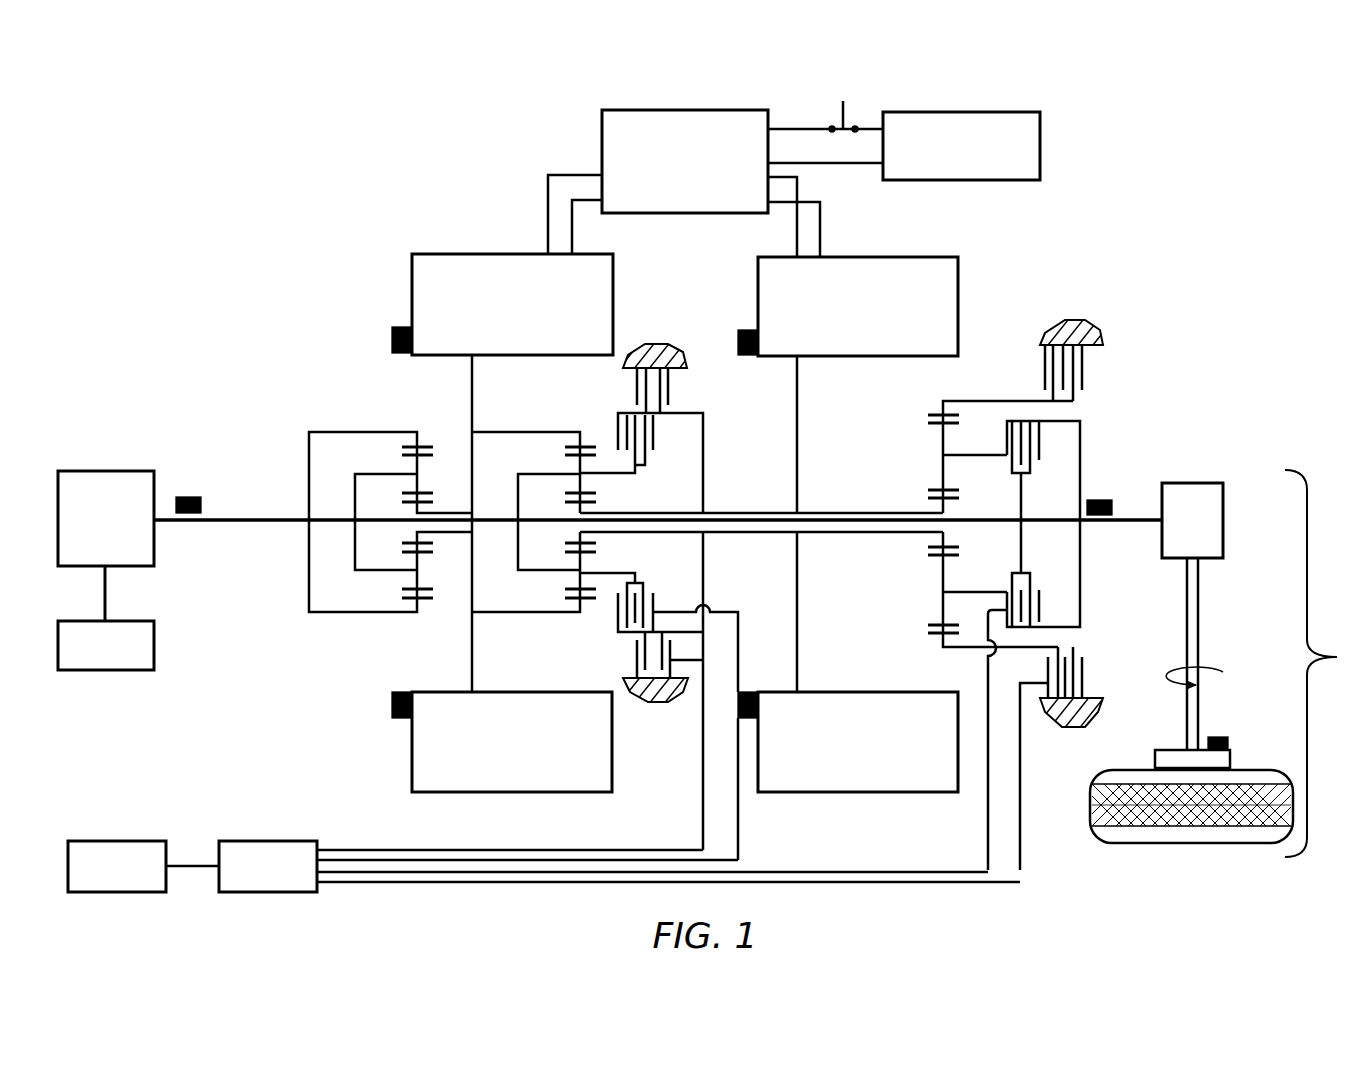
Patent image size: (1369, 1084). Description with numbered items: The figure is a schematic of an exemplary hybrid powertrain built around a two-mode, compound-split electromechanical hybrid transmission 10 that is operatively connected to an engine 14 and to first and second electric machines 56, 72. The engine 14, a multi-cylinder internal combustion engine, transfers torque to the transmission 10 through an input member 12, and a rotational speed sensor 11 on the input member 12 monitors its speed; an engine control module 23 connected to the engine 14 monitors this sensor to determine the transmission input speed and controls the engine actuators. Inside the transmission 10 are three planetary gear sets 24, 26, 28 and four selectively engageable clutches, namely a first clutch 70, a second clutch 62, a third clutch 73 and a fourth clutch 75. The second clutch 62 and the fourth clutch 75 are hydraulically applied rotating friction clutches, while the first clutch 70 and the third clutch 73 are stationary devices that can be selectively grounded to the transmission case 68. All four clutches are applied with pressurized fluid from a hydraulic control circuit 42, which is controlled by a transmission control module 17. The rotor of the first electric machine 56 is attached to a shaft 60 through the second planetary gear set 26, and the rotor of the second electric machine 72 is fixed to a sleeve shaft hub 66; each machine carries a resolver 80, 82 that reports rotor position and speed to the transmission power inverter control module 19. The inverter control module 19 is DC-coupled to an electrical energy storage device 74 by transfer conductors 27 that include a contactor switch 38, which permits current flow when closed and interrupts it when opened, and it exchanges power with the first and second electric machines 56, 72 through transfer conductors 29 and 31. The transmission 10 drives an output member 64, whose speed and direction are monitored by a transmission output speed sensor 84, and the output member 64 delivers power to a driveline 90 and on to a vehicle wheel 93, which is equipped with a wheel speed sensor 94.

The electromechanical hybrid transmission 10 is at (370, 210).
The rotational speed sensor 11 is at (188, 496).
The input member 12 is at (270, 518).
The engine 14 is at (112, 471).
The transmission control module 17 is at (105, 841).
The transmission power inverter control module 19 is at (601, 120).
The engine control module 23 is at (150, 666).
The first planetary gear set 24 is at (405, 428).
The second planetary gear set 26 is at (572, 428).
The DC transfer conductors 27 is at (786, 128).
The third planetary gear set 28 is at (938, 400).
The transfer conductors 29 is at (547, 210).
The transfer conductors 31 is at (821, 208).
The contactor switch 38 is at (844, 104).
The hydraulic control circuit 42 is at (236, 841).
The first electric machine 56 is at (412, 290).
The shaft 60 is at (996, 519).
The clutch C2 62 is at (1042, 464).
The output member 64 is at (1140, 518).
The sleeve shaft hub 66 is at (836, 512).
The transmission case 68 is at (658, 344).
The clutch C1 70 is at (1038, 370).
The second electric machine 72 is at (958, 275).
The clutch C3 73 is at (676, 392).
The electrical energy storage device 74 is at (1041, 132).
The clutch C4 75 is at (657, 452).
The resolver 80 is at (392, 338).
The resolver 82 is at (747, 328).
The transmission output speed sensor 84 is at (1106, 498).
The driveline 90 is at (1223, 663).
The vehicle wheel 93 is at (1158, 758).
The wheel speed sensor 94 is at (1226, 737).